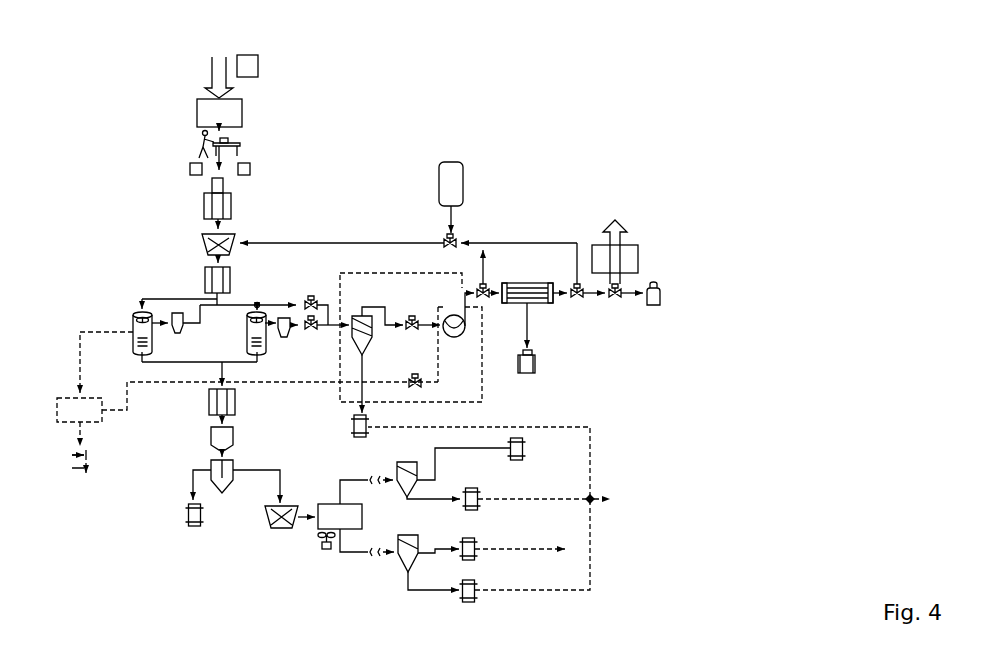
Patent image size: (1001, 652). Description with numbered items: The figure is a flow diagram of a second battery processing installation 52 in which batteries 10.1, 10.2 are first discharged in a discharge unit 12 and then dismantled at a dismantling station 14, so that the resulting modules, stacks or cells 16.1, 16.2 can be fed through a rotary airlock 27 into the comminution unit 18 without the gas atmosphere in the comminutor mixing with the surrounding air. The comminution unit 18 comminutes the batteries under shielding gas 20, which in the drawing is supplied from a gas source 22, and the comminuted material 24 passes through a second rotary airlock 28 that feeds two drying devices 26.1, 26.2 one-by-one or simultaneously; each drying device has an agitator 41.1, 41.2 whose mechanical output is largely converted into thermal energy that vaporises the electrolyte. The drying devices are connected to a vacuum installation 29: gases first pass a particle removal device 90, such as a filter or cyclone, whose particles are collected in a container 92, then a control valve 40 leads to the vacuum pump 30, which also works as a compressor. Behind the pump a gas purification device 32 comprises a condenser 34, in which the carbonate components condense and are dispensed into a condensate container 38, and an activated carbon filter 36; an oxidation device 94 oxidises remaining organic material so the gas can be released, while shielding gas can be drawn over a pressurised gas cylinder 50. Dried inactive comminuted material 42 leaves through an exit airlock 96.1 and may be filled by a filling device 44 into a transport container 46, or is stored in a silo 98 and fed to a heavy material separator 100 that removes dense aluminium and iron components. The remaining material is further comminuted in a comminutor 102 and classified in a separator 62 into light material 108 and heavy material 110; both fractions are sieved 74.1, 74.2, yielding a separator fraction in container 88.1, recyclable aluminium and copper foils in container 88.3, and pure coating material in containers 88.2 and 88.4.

The battery 10.1 is at (138, 63).
The battery 10.2 is at (255, 66).
The discharge unit 12 is at (232, 110).
The dismantling station 14 is at (262, 150).
The cell 16.1 is at (190, 170).
The cell 16.2 is at (250, 170).
The comminution unit 18 is at (235, 235).
The shielding gas 20 is at (345, 243).
The tank 22 is at (452, 162).
The comminuted material 24 is at (229, 256).
The drying device 26.1 is at (133, 330).
The drying device 26.2 is at (265, 345).
The airlock 27 is at (204, 211).
The airlock 28 is at (205, 283).
The vacuum installation 29 is at (482, 395).
The vacuum pump 30 is at (458, 337).
The gas purification device 32 is at (535, 280).
The condenser 34 is at (545, 303).
The activated carbon filter 36 is at (583, 298).
The condensate container 38 is at (535, 363).
The control valve 40 is at (412, 316).
The agitator 41.1 is at (137, 312).
The agitator 41.2 is at (258, 303).
The inactive comminuted material 42 is at (142, 362).
The filling device 44 is at (102, 418).
The transport container 46 is at (80, 475).
The pressurised gas cylinder 50 is at (660, 300).
The battery processing installation 52 is at (867, 110).
The separator 62 is at (318, 529).
The sieving 74.1 is at (397, 463).
The sieving 74.2 is at (406, 535).
The container 88.1 is at (523, 445).
The container 88.2 is at (478, 508).
The container 88.3 is at (475, 557).
The container 88.4 is at (475, 598).
The particle removal device 90 is at (372, 340).
The container 92 is at (353, 425).
The oxidation device 94 is at (638, 257).
The exit airlock 96.1 is at (235, 403).
The silo 98 is at (210, 438).
The heavy material separator 100 is at (228, 488).
The comminutor 102 is at (275, 528).
The light material 108 is at (353, 474).
The heavy material 110 is at (364, 565).